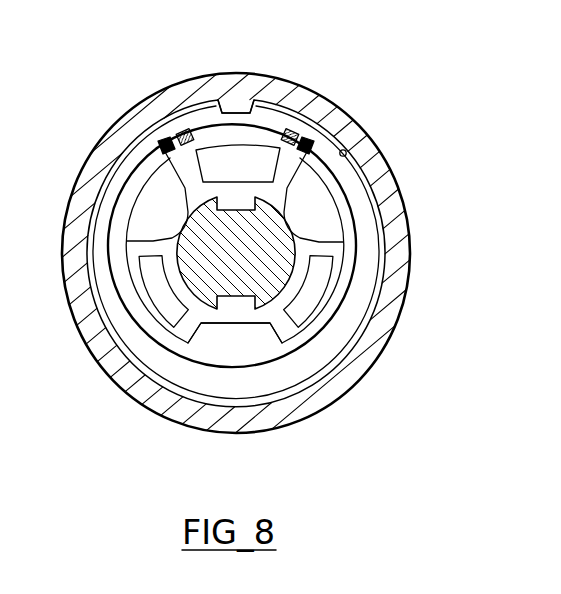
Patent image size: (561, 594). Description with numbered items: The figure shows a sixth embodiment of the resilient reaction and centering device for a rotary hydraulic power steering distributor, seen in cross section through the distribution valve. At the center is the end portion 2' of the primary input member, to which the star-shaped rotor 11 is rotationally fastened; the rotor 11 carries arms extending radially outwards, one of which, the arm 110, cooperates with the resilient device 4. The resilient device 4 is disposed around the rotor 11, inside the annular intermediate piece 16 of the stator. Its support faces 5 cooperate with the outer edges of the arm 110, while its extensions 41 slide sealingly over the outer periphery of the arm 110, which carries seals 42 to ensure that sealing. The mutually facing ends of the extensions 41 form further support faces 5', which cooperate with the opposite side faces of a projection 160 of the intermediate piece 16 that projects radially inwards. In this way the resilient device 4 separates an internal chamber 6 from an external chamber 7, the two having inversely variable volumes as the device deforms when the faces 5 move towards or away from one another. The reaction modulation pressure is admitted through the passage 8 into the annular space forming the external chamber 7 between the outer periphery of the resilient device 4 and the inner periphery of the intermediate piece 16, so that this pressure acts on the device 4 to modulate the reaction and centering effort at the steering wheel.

The end portion of the primary member 2' is at (236, 253).
The resilient device 4 is at (235, 381).
The support faces 5 is at (228, 150).
The support faces 5' is at (244, 100).
The internal chamber 6 is at (335, 234).
The external chamber 7 is at (381, 224).
The passage 8 is at (347, 151).
The star-shaped rotor 11 is at (250, 322).
The annular intermediate piece 16 is at (402, 276).
The extensions 41 is at (186, 130).
The seals 42 is at (352, 102).
The arm 110 is at (172, 168).
The projection 160 is at (258, 97).